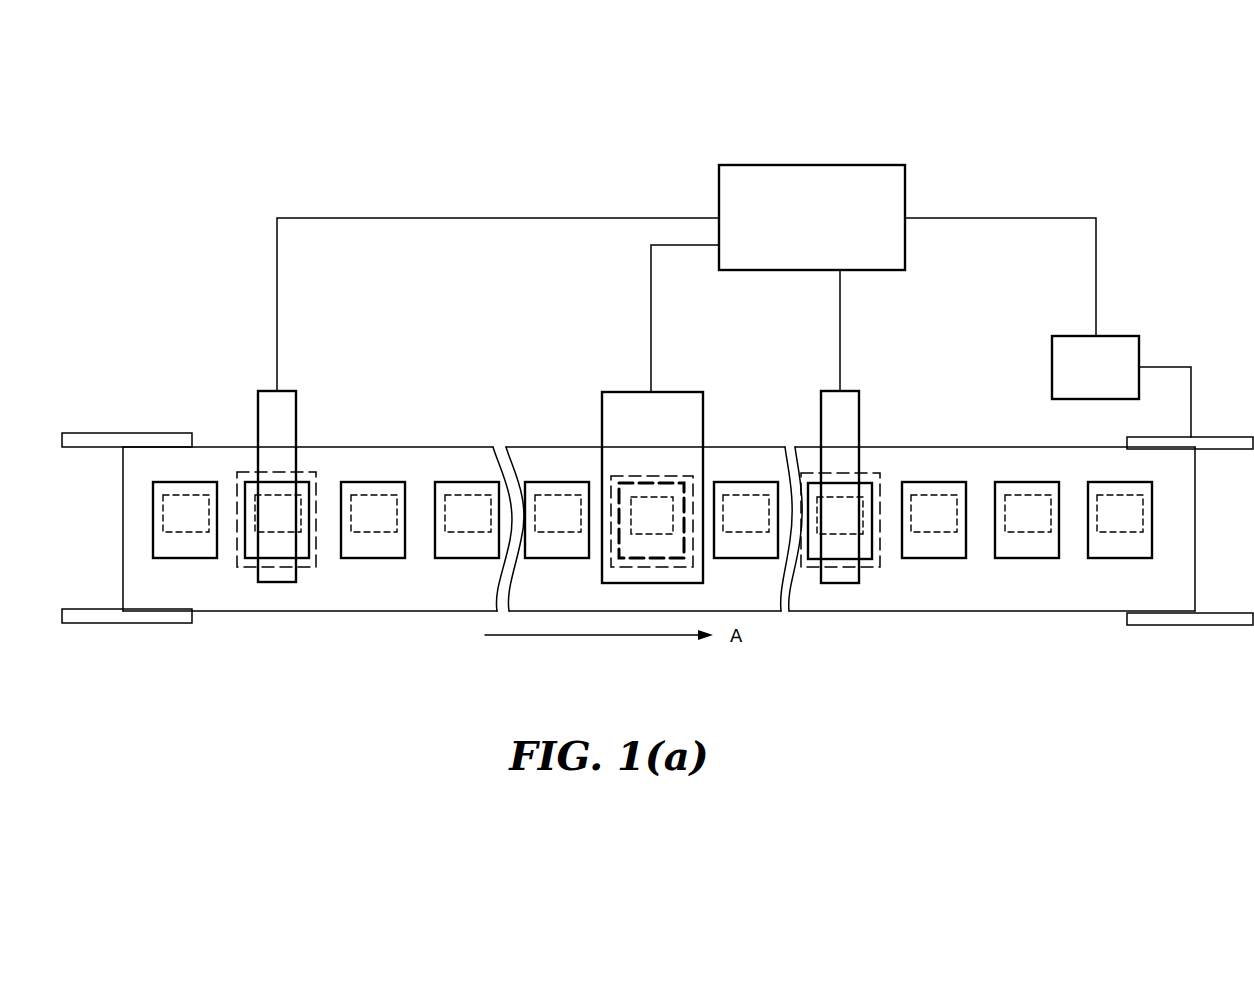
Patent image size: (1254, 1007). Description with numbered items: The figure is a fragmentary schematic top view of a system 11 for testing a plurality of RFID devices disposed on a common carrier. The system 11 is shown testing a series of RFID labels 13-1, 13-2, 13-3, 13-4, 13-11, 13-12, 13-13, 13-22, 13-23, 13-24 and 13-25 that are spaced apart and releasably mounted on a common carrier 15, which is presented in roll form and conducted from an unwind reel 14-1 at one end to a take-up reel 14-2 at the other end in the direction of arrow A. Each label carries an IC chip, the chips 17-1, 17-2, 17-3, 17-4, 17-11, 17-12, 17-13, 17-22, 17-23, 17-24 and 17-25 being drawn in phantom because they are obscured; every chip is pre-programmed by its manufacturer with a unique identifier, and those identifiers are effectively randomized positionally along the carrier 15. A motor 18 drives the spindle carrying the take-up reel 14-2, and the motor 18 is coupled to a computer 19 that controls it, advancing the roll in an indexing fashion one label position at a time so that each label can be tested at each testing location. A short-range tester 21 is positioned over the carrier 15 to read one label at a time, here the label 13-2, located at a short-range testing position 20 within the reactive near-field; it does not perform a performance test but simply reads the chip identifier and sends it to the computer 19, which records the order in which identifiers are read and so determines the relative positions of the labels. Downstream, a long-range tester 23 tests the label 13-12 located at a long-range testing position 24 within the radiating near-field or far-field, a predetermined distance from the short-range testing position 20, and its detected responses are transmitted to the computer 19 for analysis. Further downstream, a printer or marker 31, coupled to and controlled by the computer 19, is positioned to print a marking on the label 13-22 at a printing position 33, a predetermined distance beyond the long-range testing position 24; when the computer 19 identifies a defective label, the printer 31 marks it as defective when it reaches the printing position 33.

The system 11 is at (228, 151).
The RFID label 13-1 is at (170, 558).
The RFID label 13-2 is at (303, 558).
The RFID label 13-3 is at (365, 558).
The RFID label 13-4 is at (448, 558).
The RFID label 13-11 is at (533, 558).
The RFID label 13-12 is at (650, 482).
The RFID label 13-13 is at (723, 558).
The RFID label 13-22 is at (869, 478).
The RFID label 13-23 is at (953, 558).
The RFID label 13-24 is at (1027, 558).
The RFID label 13-25 is at (1108, 558).
The unwind reel 14-1 is at (78, 623).
The take-up reel 14-2 is at (1218, 618).
The common carrier 15 is at (137, 481).
The IC chip 17-1 is at (173, 495).
The IC chip 17-2 is at (278, 513).
The IC chip 17-3 is at (374, 513).
The IC chip 17-4 is at (468, 513).
The IC chip 17-11 is at (538, 495).
The IC chip 17-12 is at (635, 534).
The IC chip 17-13 is at (729, 495).
The IC chip 17-22 is at (863, 511).
The IC chip 17-23 is at (942, 496).
The IC chip 17-24 is at (1028, 496).
The IC chip 17-25 is at (1120, 496).
The motor 18 is at (1084, 391).
The computer 19 is at (801, 242).
The short-range testing position 20 is at (305, 472).
The short-range tester 21 is at (272, 418).
The long-range tester 23 is at (628, 410).
The long-range testing position 24 is at (682, 568).
The printer 31 is at (850, 410).
The printing position 33 is at (867, 568).